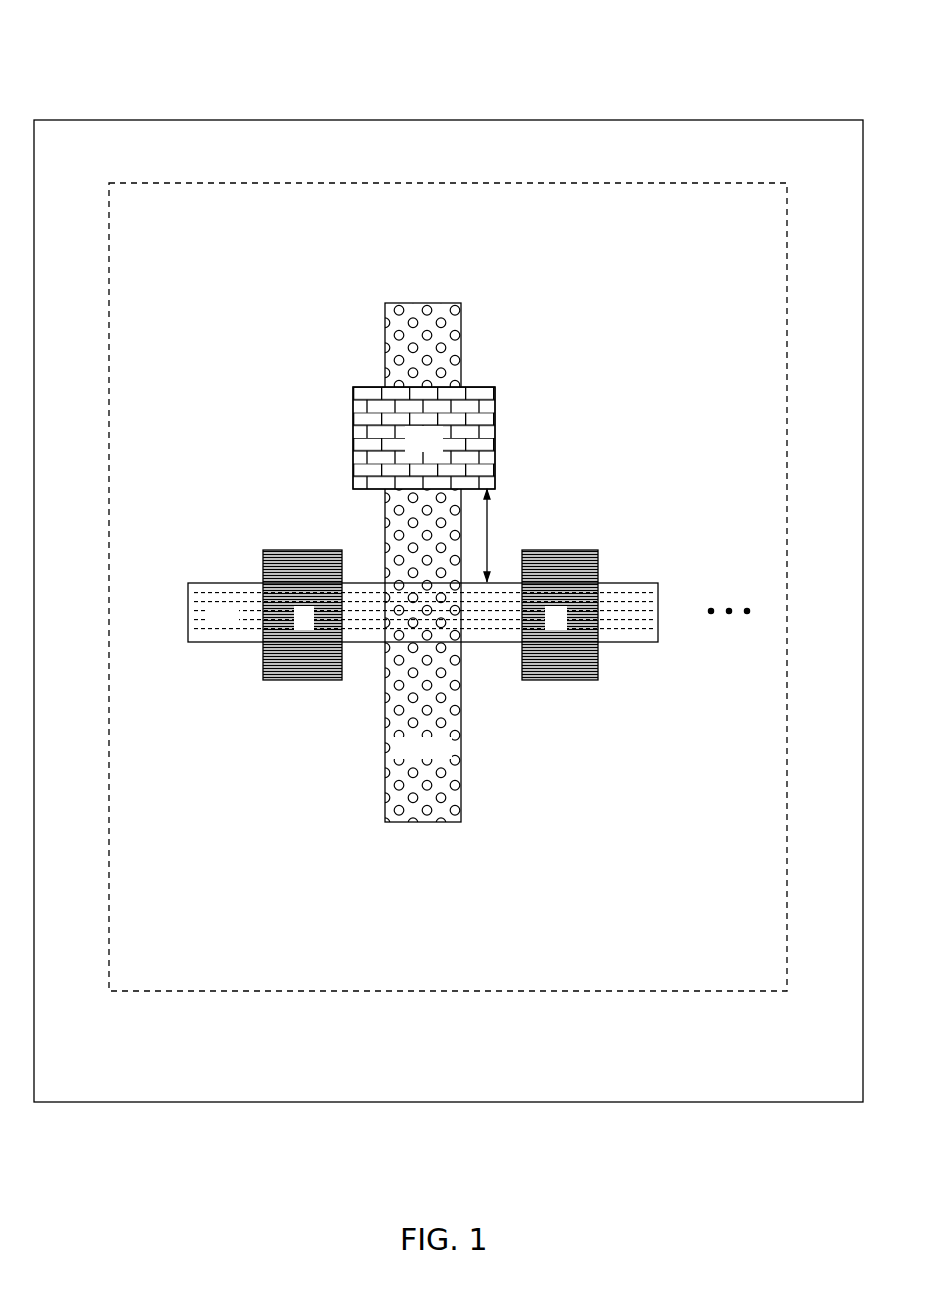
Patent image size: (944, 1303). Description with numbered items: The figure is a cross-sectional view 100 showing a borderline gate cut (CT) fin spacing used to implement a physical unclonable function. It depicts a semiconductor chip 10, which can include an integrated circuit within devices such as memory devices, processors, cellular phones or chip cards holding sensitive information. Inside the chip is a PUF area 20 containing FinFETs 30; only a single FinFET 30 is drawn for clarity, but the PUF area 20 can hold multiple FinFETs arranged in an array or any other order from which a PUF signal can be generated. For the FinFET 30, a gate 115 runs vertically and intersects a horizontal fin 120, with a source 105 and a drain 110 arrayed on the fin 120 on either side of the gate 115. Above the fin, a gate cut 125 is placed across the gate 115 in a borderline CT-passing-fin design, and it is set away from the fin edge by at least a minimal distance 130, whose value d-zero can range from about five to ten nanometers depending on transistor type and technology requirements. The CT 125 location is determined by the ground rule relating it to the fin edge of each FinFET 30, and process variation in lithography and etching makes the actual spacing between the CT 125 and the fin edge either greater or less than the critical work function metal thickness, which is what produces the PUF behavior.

The cross-sectional view 100 is at (205, 56).
The semiconductor chip 10 is at (604, 1103).
The PUF area 20 is at (603, 992).
The FinFET 30 is at (305, 298).
The source 105 is at (303, 681).
The drain 110 is at (545, 681).
The gate 115 is at (462, 797).
The fin 120 is at (242, 582).
The gate cut (CT) 125 is at (474, 387).
The minimal distance d0 130 is at (487, 535).